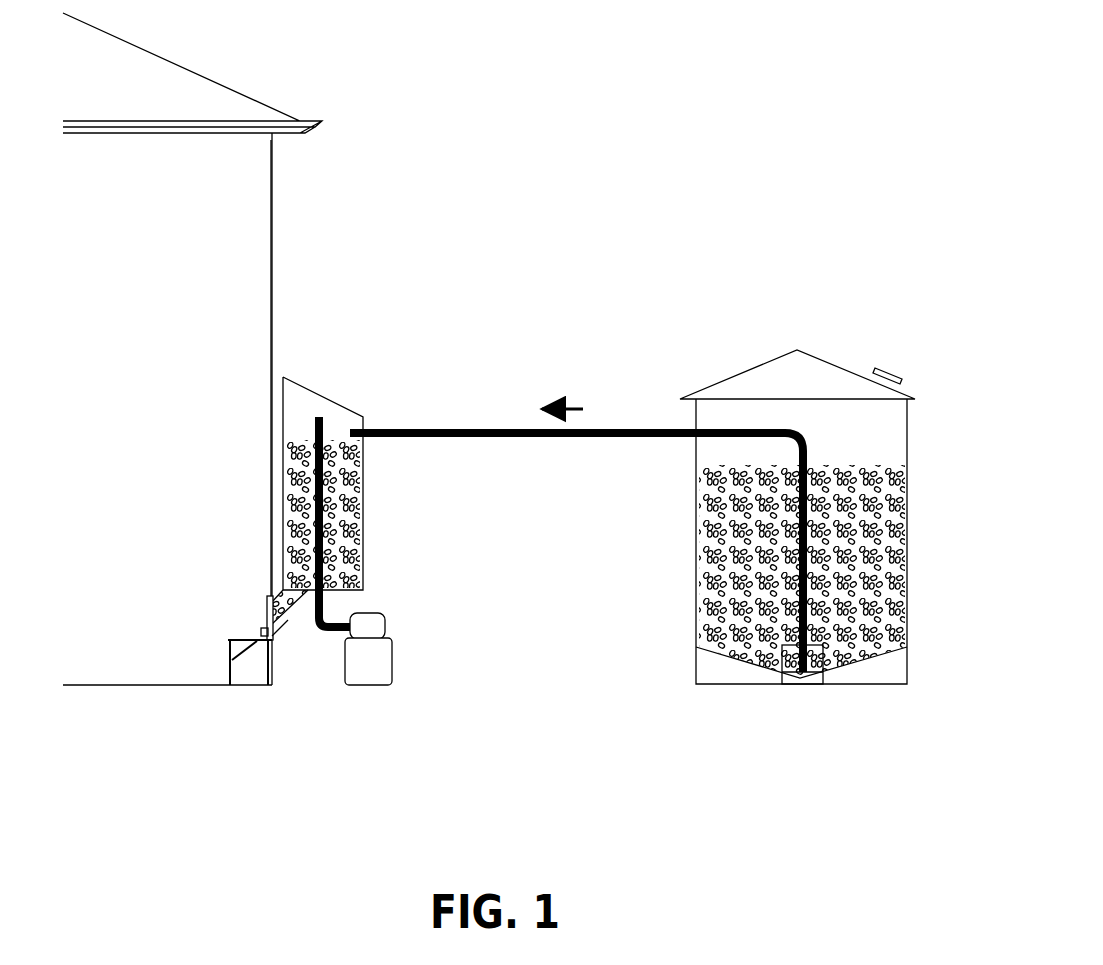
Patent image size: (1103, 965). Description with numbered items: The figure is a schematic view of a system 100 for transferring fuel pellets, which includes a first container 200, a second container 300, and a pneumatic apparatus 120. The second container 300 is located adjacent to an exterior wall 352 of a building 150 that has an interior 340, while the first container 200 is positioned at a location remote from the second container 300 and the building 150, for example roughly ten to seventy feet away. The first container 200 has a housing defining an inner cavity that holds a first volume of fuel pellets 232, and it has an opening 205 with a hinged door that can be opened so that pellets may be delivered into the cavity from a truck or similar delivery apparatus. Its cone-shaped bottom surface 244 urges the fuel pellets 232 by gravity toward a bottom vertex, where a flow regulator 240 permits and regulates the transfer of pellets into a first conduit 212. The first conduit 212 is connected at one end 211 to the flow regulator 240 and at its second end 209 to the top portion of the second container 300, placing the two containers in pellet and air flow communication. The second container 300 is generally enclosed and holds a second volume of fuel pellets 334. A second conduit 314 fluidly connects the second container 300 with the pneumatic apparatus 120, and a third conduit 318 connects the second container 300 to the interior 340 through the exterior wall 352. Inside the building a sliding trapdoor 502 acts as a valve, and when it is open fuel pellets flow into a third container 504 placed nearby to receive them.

The system 100 is at (724, 105).
The building 150 is at (244, 58).
The exterior wall 352 is at (273, 227).
The second container 300 is at (340, 376).
The fuel pellets 334 is at (358, 517).
The interior 340 is at (174, 633).
The sliding trapdoor/gate 502 is at (268, 606).
The third container 504 is at (250, 675).
The second conduit 314 is at (330, 633).
The third conduit 318 is at (288, 620).
The pneumatic apparatus 120 is at (392, 660).
The first conduit 212 is at (576, 504).
The second end 209 is at (350, 433).
The first container 200 is at (876, 349).
The opening 205 is at (903, 379).
The fuel pellets 232 is at (893, 557).
The flow regulator 240 is at (828, 660).
The one end 211 is at (806, 640).
The cone-shaped/sloped bottom surface 244 is at (758, 668).